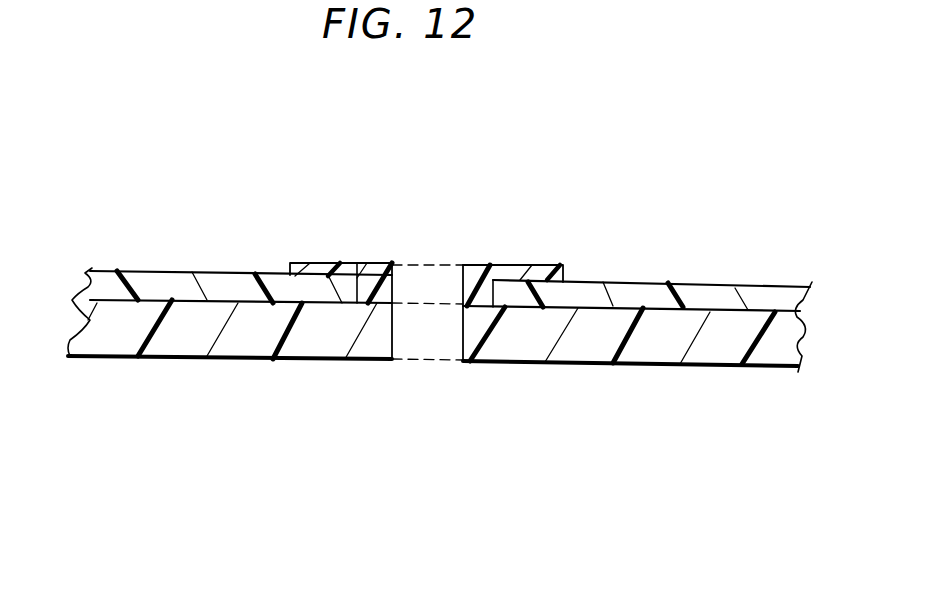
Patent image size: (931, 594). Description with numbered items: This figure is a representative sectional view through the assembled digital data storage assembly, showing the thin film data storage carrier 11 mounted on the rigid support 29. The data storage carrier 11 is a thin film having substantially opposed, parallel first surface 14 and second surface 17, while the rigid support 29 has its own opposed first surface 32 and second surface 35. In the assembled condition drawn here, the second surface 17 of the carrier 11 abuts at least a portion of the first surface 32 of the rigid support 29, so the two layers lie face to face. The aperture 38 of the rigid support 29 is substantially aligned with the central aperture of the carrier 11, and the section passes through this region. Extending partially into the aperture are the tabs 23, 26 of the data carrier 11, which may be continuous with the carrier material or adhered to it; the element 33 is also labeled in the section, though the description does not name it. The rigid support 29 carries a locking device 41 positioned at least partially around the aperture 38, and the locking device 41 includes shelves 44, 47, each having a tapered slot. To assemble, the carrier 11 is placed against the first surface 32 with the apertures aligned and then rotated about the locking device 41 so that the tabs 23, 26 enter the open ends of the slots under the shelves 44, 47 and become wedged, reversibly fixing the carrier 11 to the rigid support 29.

The thin film data storage carrier 11 is at (90, 282).
The first surface 14 is at (140, 273).
The second surface 17 is at (190, 300).
The tab 23 is at (523, 302).
The tab 26 is at (327, 293).
The rigid support 29 is at (72, 312).
The first surface 32 is at (593, 308).
The conductive trace 33 is at (258, 306).
The second surface 35 is at (118, 359).
The aperture 38 is at (437, 338).
The locking device 41 is at (382, 262).
The shelf 44 is at (542, 265).
The shelf 47 is at (313, 262).